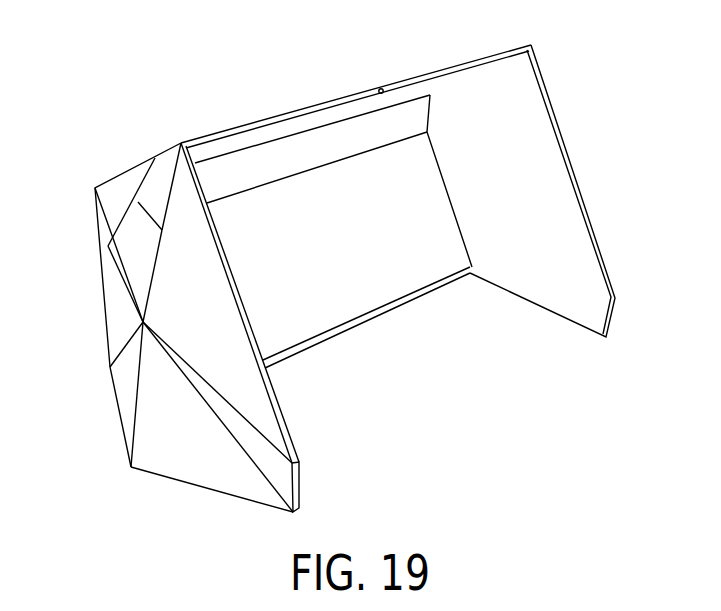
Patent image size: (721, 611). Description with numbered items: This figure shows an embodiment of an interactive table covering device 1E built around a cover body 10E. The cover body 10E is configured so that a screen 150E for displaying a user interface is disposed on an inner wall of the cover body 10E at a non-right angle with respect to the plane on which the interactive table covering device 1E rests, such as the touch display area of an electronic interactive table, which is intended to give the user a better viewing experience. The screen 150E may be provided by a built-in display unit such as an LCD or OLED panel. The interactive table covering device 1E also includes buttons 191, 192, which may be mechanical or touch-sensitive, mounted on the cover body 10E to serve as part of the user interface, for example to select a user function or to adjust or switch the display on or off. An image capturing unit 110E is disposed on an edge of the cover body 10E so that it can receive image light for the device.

The interactive table covering device 1E is at (654, 48).
The cover body 10E is at (320, 266).
The image capturing unit 110E is at (381, 89).
The screen 150E is at (393, 282).
The button 191 is at (128, 230).
The button 192 is at (145, 182).